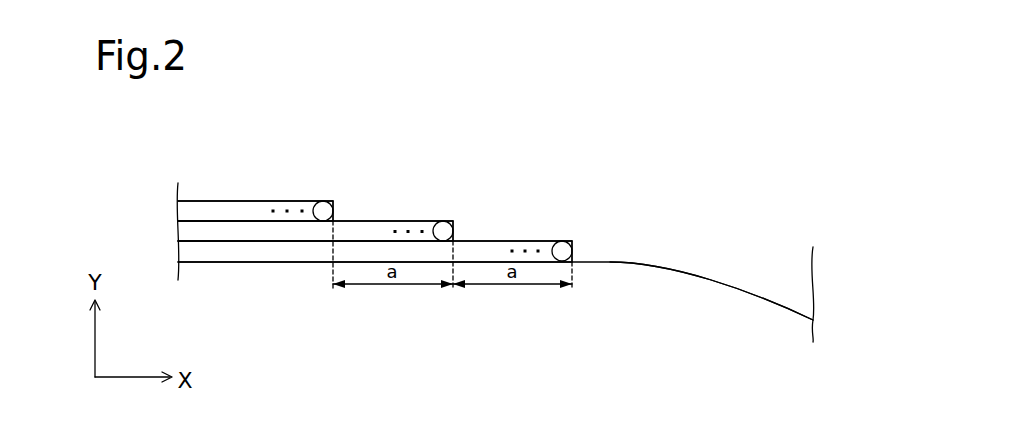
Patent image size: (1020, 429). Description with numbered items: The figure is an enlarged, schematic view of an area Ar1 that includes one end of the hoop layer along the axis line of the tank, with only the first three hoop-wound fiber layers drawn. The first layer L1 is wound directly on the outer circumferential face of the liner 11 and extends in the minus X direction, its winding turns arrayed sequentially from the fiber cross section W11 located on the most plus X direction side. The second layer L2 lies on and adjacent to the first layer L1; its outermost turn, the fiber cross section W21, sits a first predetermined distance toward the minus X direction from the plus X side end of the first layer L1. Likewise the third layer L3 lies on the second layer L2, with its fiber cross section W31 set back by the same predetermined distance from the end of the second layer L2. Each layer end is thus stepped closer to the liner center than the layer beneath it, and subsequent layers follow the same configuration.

The liner 11 is at (636, 302).
The fiber cross section W31 is at (327, 203).
The fiber cross section W21 is at (447, 226).
The fiber cross section W11 is at (567, 246).
The third layer L3 is at (336, 212).
The second layer L2 is at (456, 231).
The first layer L1 is at (576, 252).
The area Ar1 is at (723, 240).